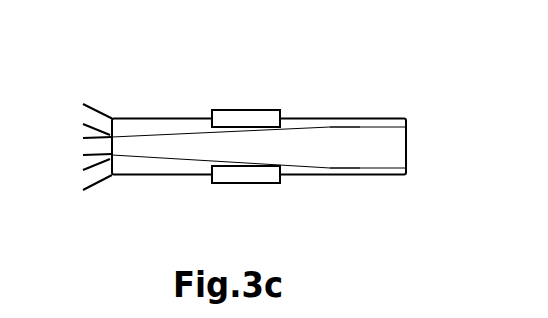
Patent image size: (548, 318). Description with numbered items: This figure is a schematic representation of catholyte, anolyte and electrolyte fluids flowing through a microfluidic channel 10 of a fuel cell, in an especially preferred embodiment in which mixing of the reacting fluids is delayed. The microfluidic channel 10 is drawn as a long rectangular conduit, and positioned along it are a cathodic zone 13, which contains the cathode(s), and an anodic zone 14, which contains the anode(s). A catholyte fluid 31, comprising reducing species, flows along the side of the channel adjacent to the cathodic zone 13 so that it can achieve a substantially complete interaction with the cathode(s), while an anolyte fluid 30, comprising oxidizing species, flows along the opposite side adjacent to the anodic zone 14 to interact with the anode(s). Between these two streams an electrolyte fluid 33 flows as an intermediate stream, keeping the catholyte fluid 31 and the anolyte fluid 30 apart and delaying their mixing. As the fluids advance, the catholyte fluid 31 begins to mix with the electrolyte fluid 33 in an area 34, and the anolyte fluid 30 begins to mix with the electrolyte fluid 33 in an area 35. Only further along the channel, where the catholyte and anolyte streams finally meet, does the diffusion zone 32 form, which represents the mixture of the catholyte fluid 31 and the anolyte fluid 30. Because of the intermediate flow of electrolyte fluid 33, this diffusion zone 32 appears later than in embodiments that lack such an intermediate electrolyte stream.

The microfluidic channel 10 is at (190, 112).
The cathodic zone 13 is at (247, 114).
The anodic zone 14 is at (247, 178).
The anolyte fluid 30 is at (110, 166).
The catholyte fluid 31 is at (111, 126).
The diffusion zone 32 is at (407, 146).
The electrolyte fluid 33 is at (111, 146).
The area of catholyte-electrolyte mixture 34 is at (341, 134).
The area of anolyte-electrolyte mixture 35 is at (341, 161).